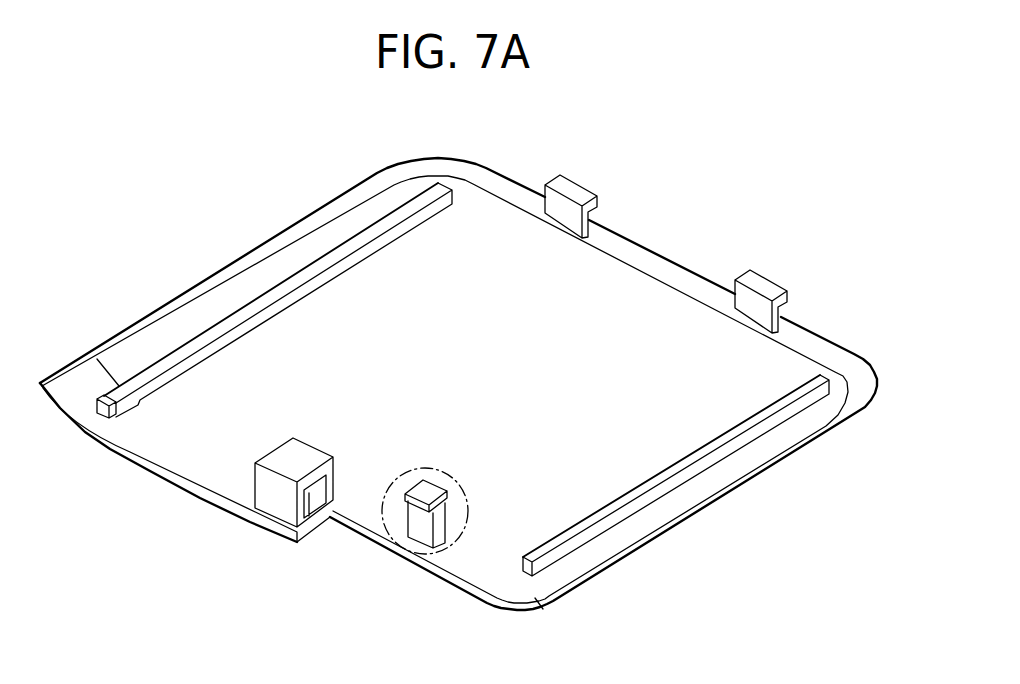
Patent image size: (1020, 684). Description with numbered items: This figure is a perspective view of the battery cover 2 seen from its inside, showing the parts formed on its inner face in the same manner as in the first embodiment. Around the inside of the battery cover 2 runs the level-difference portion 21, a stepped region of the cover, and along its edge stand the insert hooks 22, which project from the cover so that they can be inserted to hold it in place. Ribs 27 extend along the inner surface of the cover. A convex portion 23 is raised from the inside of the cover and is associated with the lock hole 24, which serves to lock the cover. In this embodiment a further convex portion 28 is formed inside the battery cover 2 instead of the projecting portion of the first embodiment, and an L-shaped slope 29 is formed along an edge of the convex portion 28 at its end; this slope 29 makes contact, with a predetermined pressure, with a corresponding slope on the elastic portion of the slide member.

The battery cover 2 is at (289, 228).
The level-difference portion 21 is at (482, 600).
The insert hooks 22 is at (580, 188).
The convex portion 23 is at (285, 458).
The lock hole 24 is at (310, 498).
The ribs 27 is at (223, 320).
The convex portion 28 is at (432, 493).
The slope 29 is at (412, 492).